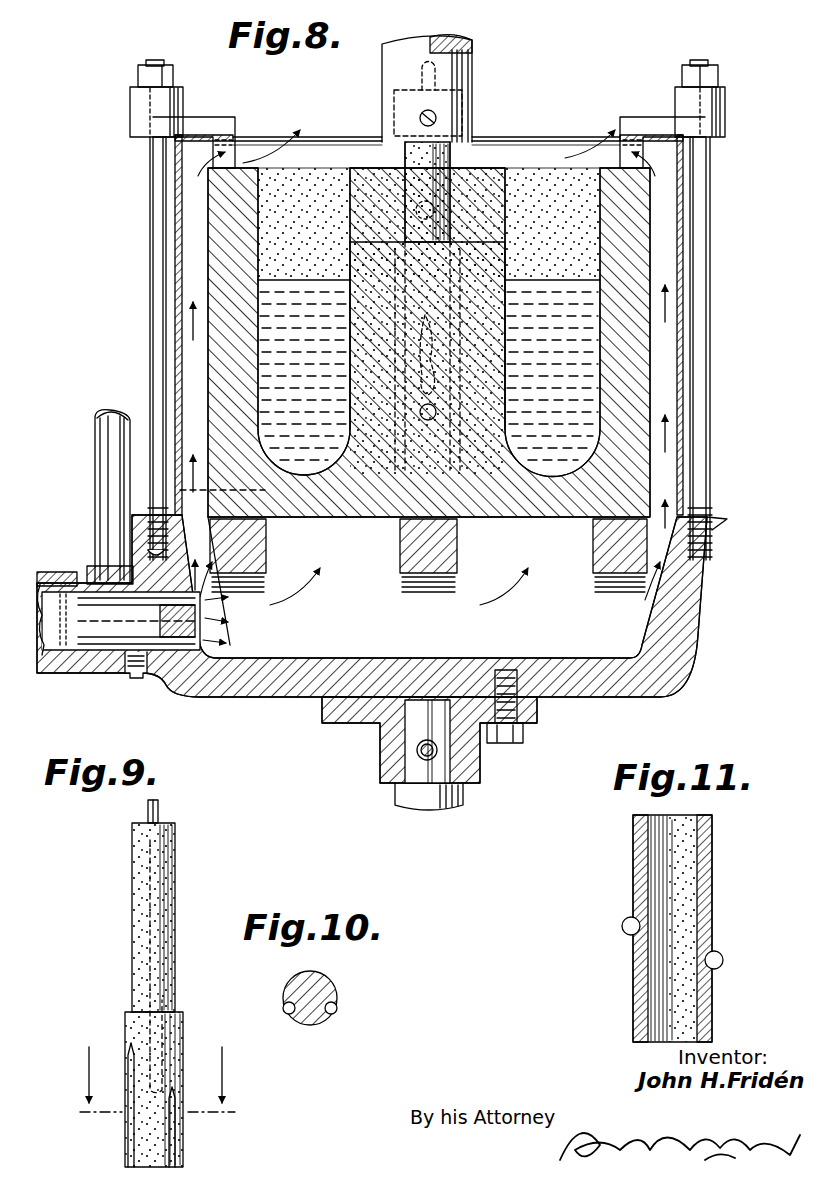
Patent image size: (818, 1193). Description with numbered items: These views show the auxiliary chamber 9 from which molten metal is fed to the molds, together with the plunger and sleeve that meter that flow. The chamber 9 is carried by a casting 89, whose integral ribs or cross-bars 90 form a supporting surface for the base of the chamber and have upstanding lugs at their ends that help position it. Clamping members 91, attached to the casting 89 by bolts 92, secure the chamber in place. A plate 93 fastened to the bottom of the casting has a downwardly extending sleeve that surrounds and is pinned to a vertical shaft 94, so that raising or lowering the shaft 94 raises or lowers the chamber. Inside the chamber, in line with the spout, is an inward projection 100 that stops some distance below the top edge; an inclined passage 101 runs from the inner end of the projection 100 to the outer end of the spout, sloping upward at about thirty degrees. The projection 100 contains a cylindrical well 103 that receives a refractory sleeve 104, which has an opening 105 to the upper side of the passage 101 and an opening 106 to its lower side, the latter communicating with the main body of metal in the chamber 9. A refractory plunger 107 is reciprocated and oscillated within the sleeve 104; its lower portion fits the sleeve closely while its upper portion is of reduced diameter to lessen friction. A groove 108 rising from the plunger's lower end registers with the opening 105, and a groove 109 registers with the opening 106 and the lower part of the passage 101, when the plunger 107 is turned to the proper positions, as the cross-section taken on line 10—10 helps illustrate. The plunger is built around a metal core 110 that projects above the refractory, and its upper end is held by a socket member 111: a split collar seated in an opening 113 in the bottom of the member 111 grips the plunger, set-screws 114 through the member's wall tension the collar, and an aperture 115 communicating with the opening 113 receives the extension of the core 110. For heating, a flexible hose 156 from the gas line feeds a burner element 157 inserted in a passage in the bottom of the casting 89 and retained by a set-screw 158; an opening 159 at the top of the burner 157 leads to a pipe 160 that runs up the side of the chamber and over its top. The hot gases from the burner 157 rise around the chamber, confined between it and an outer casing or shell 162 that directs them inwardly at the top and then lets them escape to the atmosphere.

In FIG. 8, the auxiliary chamber 9 is at (635, 378).
In FIG. 8, the casting 89 is at (697, 620).
In FIG. 8, the ribs or cross-bars 90 is at (262, 540).
In FIG. 8, the clamping members 91 is at (222, 125).
In FIG. 8, the bolts 92 is at (152, 229).
In FIG. 8, the plate 93 is at (338, 723).
In FIG. 8, the vertical shaft 94 is at (405, 803).
In FIG. 8, the inward projection 100 is at (358, 337).
In FIG. 8, the inclined passage 101 is at (437, 412).
In FIG. 8, the cylindrical well 103 is at (472, 334).
In FIG. 8, the plunger 107 is at (414, 203).
In FIG. 9, the plunger 107 is at (137, 880).
In FIG. 10, the plunger 107 is at (322, 985).
In FIG. 9, the groove 108 is at (128, 1140).
In FIG. 10, the groove 108 is at (286, 1006).
In FIG. 9, the groove 109 is at (178, 1145).
In FIG. 10, the groove 109 is at (334, 1012).
In FIG. 9, the metal core 110 is at (158, 810).
In FIG. 8, the socket member 111 is at (466, 62).
In FIG. 8, the opening 113 is at (392, 99).
In FIG. 8, the set-screws 114 is at (420, 118).
In FIG. 8, the aperture 115 is at (436, 78).
In FIG. 11, the sleeve 104 is at (633, 875).
In FIG. 11, the opening 105 is at (628, 932).
In FIG. 11, the opening 106 is at (712, 965).
In FIG. 8, the flexible hose 156 is at (62, 674).
In FIG. 8, the burner element 157 is at (80, 652).
In FIG. 8, the set-screw 158 is at (140, 678).
In FIG. 8, the opening 159 is at (125, 600).
In FIG. 8, the tube or pipe 160 is at (100, 520).
In FIG. 8, the outer casing or shell 162 is at (177, 312).
In FIG. 9, the section line 10 is at (158, 1086).